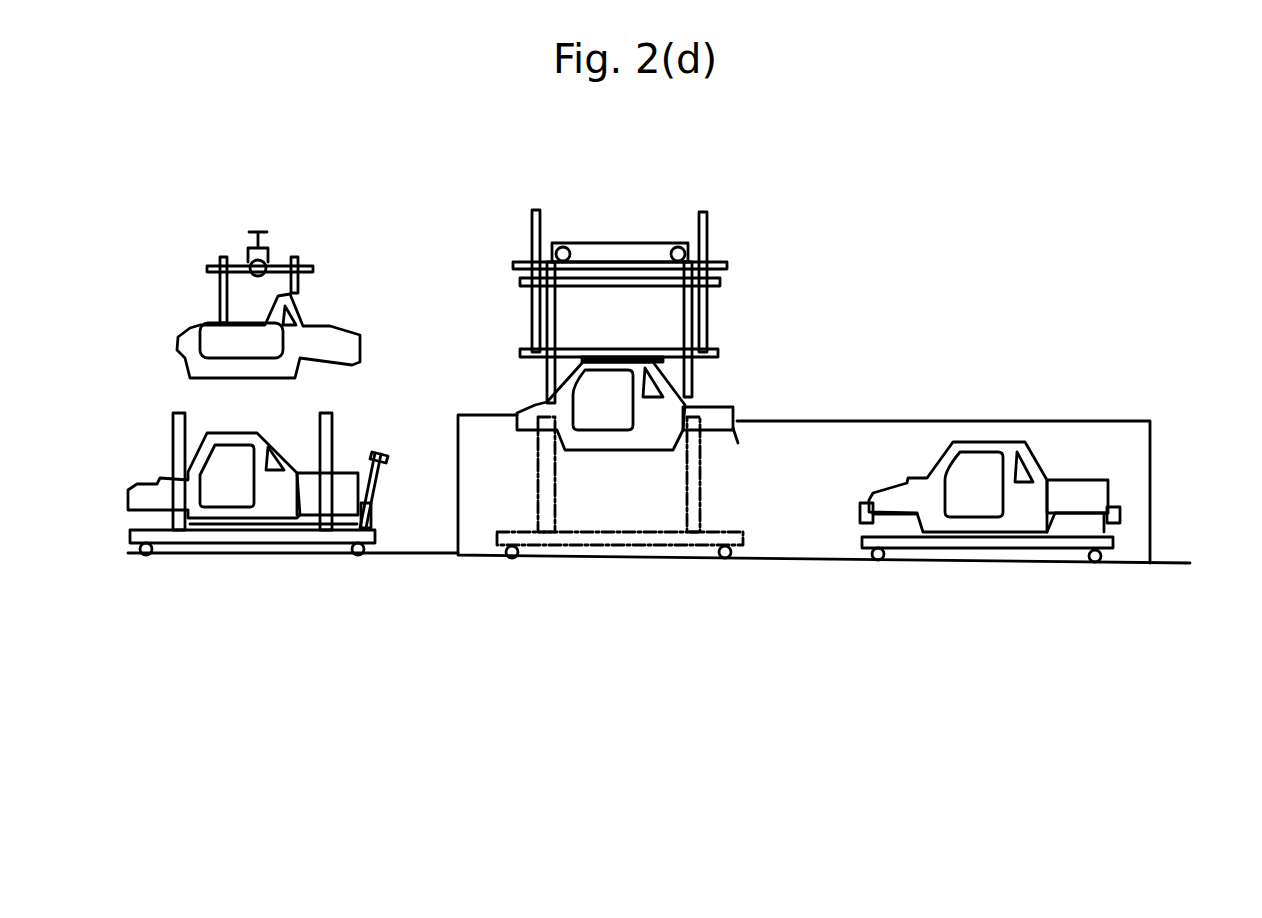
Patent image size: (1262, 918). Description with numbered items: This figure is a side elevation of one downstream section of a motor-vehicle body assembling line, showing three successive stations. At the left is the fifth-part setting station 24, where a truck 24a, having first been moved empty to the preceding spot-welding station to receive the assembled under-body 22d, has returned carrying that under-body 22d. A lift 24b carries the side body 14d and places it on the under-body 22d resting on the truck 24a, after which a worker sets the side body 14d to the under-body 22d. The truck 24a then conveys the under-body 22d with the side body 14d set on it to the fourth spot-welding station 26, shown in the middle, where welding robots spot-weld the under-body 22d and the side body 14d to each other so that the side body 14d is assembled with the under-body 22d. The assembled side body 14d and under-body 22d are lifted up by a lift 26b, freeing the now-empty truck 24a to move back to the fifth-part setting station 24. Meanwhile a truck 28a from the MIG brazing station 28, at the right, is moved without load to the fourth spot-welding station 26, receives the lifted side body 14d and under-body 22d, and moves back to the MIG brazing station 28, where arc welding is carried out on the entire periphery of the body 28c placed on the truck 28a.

The side body 14d is at (320, 324).
The under-body 22d is at (340, 478).
The fifth-part setting station 24 is at (165, 576).
The truck 24a is at (234, 545).
The lift 24b is at (277, 266).
The fourth spot-welding station 26 is at (570, 579).
The lift 26b is at (707, 320).
The MIG brazing station 28 is at (902, 582).
The truck 28a is at (963, 550).
The body 28c is at (998, 416).